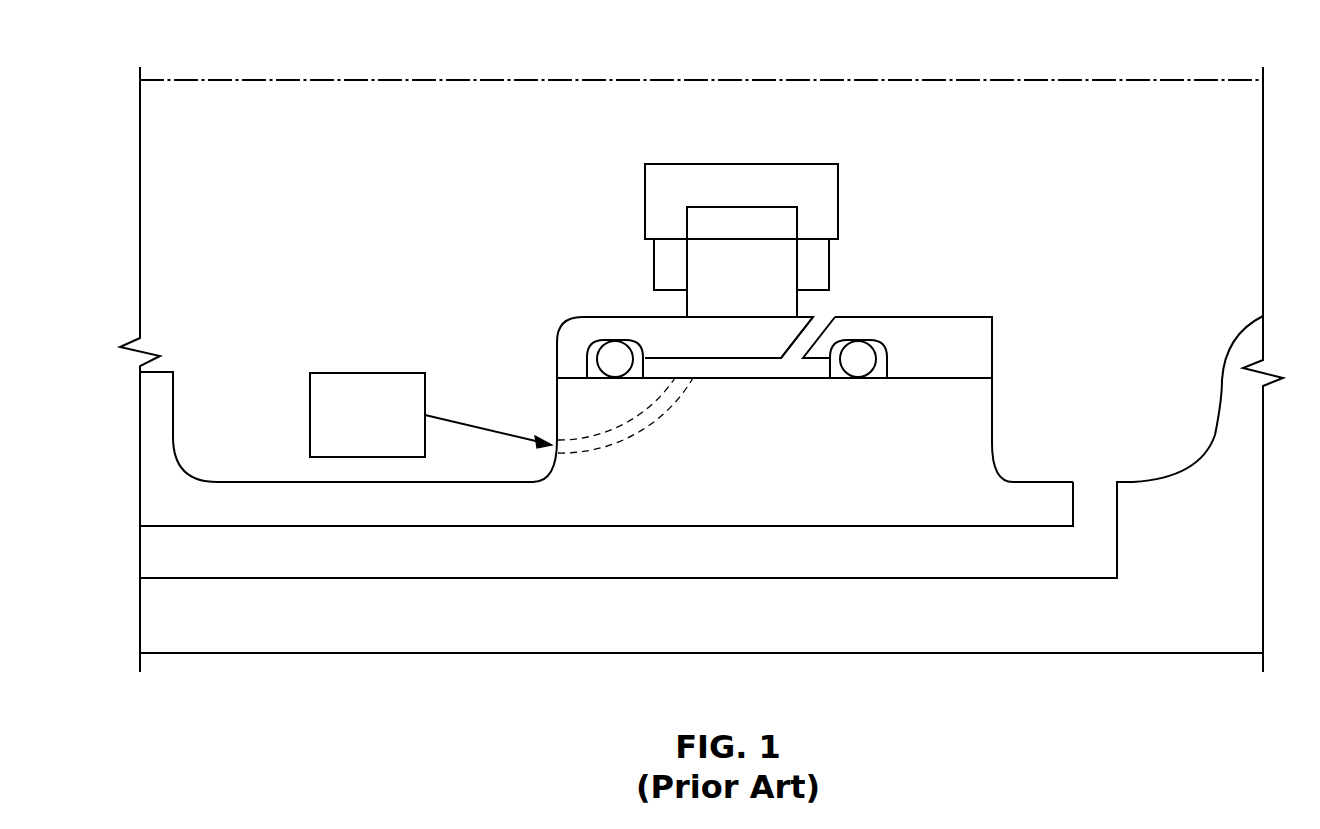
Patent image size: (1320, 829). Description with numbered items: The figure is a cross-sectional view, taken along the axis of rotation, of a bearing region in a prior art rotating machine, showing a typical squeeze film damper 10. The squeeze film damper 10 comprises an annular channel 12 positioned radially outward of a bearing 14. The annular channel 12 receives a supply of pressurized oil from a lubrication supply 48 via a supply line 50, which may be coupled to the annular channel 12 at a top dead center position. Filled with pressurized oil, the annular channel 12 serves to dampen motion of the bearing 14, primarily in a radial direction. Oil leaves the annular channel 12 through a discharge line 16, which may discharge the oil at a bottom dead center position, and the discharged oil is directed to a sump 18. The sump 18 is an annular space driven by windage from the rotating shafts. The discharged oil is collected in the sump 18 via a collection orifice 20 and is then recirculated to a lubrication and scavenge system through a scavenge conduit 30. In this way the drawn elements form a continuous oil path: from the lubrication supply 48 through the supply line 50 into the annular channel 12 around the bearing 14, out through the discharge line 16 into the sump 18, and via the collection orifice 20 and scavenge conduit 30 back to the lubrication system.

The squeeze film damper 10 is at (655, 350).
The annular channel 12 is at (672, 365).
The bearing 14 is at (752, 232).
The discharge line 16 is at (823, 328).
The sump 18 is at (1088, 401).
The collection orifice 20 is at (1095, 482).
The scavenge conduit 30 is at (923, 559).
The lubrication supply 48 is at (370, 372).
The supply line 50 is at (638, 432).